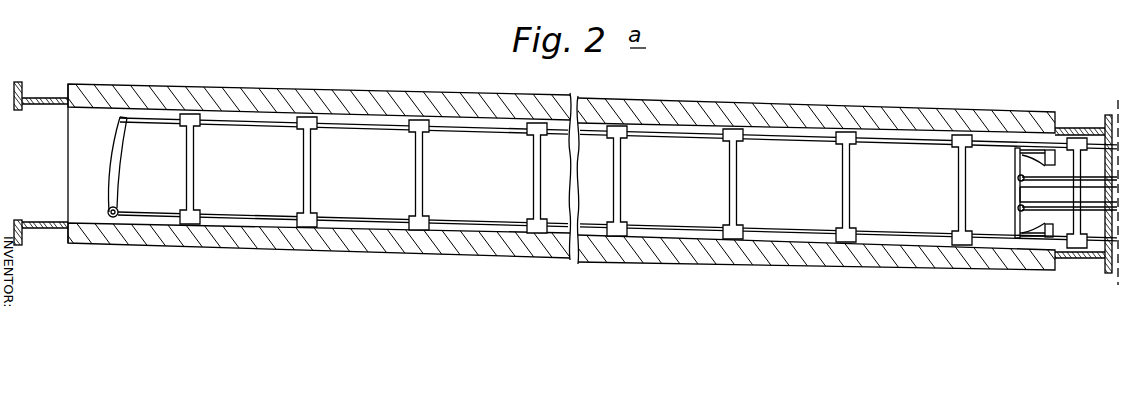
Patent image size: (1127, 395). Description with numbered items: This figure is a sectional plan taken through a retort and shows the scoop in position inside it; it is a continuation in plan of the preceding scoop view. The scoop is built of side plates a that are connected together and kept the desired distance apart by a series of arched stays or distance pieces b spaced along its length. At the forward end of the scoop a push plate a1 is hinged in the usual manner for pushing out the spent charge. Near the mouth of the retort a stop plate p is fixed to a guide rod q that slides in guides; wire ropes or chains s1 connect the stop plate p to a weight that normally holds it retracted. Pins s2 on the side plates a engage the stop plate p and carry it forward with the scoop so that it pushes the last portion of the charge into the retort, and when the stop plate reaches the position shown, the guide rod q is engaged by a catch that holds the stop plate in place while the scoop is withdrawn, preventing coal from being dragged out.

The side plates a is at (124, 121).
The push plate a1 is at (147, 208).
The arched stays or distance pieces b is at (310, 190).
The stop plate p is at (1015, 170).
The guide rod q is at (1107, 200).
The wire ropes or chains s1 is at (1093, 212).
The pins s2 is at (1049, 180).